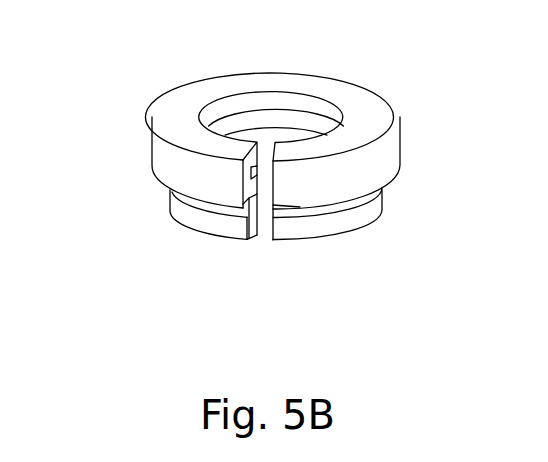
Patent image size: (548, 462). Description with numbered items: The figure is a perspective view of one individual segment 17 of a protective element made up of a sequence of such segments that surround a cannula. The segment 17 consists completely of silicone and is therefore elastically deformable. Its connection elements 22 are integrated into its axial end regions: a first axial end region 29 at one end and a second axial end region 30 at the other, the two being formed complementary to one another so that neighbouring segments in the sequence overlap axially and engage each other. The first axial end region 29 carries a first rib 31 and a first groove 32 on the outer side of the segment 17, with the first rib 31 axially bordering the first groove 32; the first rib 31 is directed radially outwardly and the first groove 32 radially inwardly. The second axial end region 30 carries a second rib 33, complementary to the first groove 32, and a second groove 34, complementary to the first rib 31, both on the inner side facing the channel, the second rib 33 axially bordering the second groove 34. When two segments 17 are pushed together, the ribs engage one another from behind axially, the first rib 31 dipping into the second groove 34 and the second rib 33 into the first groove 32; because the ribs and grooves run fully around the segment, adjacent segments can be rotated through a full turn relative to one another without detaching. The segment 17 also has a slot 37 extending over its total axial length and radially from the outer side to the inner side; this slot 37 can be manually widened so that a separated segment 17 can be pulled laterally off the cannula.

The segment 17 is at (275, 169).
The connection element 22 is at (275, 160).
The second axial end region 30 is at (222, 120).
The first axial end region 29 is at (389, 248).
The first rib 31 is at (212, 264).
The first groove 32 is at (291, 215).
The second rib 33 is at (300, 103).
The second groove 34 is at (270, 122).
The slot 37 is at (257, 236).